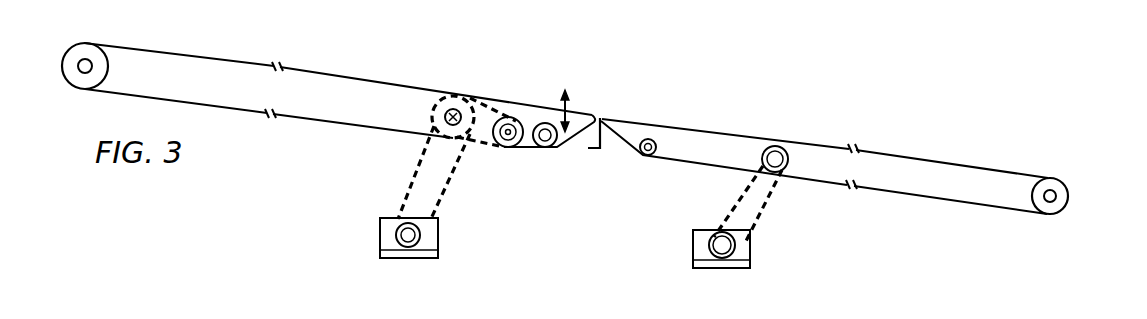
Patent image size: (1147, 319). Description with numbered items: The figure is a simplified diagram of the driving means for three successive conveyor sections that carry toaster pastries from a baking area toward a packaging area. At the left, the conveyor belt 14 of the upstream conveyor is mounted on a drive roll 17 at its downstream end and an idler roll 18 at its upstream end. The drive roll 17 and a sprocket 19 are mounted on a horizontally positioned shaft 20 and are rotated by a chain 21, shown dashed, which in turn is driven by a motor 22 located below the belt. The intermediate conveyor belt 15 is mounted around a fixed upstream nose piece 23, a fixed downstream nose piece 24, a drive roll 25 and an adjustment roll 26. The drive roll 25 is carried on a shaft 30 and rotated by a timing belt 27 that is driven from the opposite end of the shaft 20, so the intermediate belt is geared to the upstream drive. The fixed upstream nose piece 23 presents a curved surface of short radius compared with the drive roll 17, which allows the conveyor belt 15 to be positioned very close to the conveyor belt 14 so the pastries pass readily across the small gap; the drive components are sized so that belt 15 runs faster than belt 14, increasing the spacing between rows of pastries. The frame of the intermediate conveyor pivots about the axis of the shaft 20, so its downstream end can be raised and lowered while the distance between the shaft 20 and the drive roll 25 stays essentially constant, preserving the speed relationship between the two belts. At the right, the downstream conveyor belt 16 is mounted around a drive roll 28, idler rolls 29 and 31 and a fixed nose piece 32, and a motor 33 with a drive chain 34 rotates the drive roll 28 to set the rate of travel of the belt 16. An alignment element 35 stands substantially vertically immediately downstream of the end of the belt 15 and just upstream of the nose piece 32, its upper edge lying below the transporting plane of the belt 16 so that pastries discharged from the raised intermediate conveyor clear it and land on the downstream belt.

The conveyor belt 14 is at (300, 68).
The conveyor belt 15 is at (538, 106).
The conveyor belt 16 is at (766, 133).
The drive roll 17 is at (435, 95).
The idler roll 18 is at (108, 67).
The sprocket 19 is at (455, 95).
The shaft 20 is at (440, 113).
The chain 21 is at (413, 173).
The motor 22 is at (380, 225).
The fixed upstream nose piece 23 is at (482, 100).
The fixed downstream nose piece 24 is at (593, 116).
The drive roll 25 is at (522, 142).
The adjustment roll 26 is at (560, 150).
The timing belt 27 is at (478, 150).
The drive roll 28 is at (790, 158).
The idler roll 29 is at (658, 148).
The shaft 30 is at (510, 148).
The idler roll 31 is at (1069, 196).
The fixed nose piece 32 is at (616, 118).
The motor 33 is at (693, 240).
The drive chain 34 is at (727, 206).
The alignment element 35 is at (604, 118).